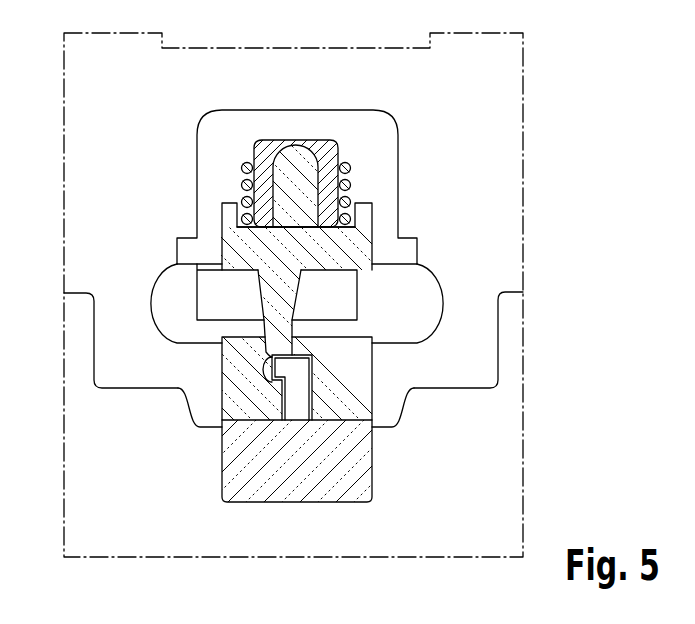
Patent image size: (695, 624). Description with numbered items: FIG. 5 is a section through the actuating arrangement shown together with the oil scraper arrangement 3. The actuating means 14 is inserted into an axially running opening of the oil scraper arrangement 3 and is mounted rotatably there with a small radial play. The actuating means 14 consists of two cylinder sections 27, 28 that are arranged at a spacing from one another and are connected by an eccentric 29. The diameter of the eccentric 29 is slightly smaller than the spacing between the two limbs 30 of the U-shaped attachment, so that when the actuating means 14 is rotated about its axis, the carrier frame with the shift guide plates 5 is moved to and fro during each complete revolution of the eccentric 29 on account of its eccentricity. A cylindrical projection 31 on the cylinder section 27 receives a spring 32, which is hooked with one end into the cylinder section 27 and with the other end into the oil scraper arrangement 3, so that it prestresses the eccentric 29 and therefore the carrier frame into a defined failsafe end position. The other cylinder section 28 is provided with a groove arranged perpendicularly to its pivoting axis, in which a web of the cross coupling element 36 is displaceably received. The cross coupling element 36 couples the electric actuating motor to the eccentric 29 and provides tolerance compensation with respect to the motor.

The oil scraper arrangement 3 is at (560, 120).
The shift guide plates 5 is at (176, 319).
The actuating means 14 is at (196, 361).
The cylinder section 27 is at (352, 240).
The cylinder section 28 is at (228, 387).
The eccentric 29 is at (290, 300).
The limbs 30 is at (212, 288).
The cylindrical projection 31 is at (323, 153).
The spring 32 is at (244, 165).
The cross coupling element 36 is at (388, 451).